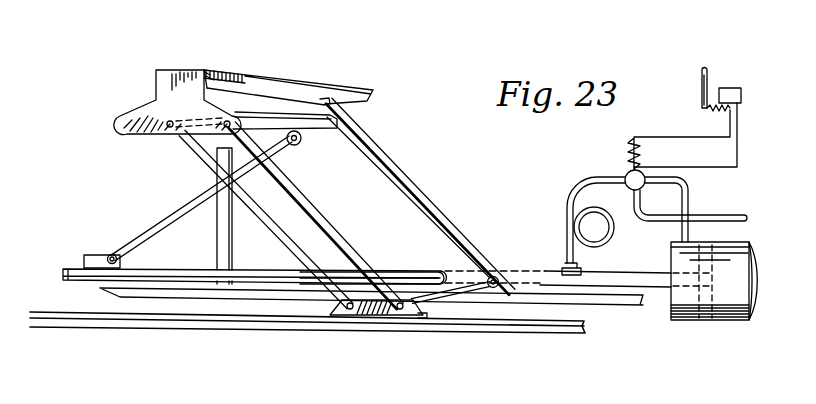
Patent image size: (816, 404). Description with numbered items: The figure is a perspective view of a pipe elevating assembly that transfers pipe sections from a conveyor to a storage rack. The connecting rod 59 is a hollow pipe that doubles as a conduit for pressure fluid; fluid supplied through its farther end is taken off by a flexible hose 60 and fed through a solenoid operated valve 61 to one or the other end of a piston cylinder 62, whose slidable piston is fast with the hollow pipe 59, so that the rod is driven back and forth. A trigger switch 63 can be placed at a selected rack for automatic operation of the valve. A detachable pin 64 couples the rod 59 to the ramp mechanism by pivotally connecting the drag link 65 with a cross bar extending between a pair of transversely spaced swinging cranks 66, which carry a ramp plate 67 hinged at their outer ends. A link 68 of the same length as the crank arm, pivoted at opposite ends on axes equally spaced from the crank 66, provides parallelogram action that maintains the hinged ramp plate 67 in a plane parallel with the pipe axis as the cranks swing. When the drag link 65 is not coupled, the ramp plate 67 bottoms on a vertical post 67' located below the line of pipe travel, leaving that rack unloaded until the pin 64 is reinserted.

The connecting rod 59 is at (401, 271).
The flexible hose 60 is at (566, 207).
The solenoid operated valve 61 is at (641, 187).
The piston cylinder 62 is at (732, 313).
The trigger switch 63 is at (733, 88).
The detachable pin 64 is at (112, 253).
The drag link 65 is at (167, 219).
The swinging crank 66 is at (287, 248).
The ramp plate 67 is at (243, 77).
The vertical post 67' is at (202, 216).
The link 68 is at (301, 203).